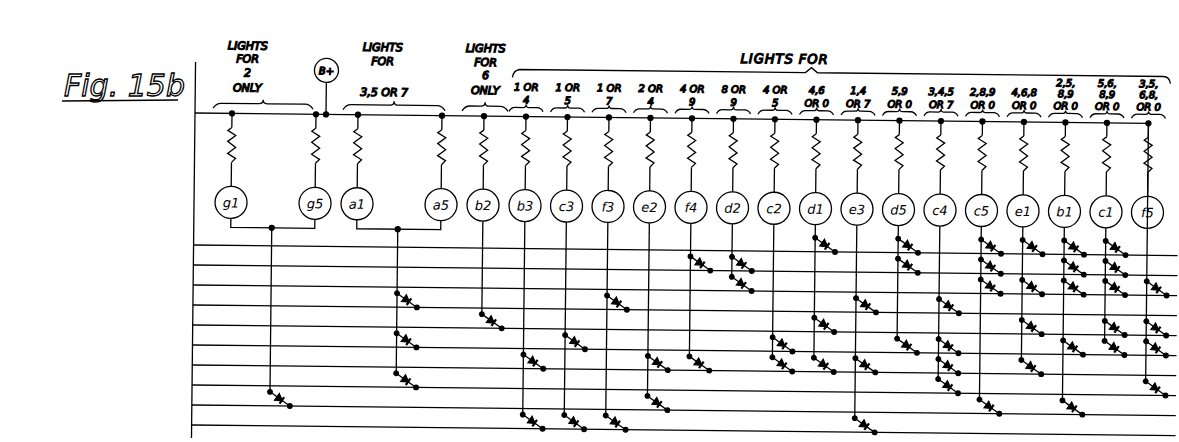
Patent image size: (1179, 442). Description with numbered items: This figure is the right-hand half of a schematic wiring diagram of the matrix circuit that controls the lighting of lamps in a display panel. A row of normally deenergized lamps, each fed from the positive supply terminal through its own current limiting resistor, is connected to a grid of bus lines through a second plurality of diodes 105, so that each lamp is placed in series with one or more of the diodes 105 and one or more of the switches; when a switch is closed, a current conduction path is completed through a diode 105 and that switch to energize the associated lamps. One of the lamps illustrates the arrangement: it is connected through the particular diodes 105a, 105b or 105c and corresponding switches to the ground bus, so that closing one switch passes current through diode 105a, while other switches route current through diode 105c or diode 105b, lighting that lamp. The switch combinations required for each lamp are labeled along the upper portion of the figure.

The diodes 105 is at (492, 320).
The diode 105a is at (836, 232).
The diode 105b is at (836, 304).
The diode 105c is at (836, 342).